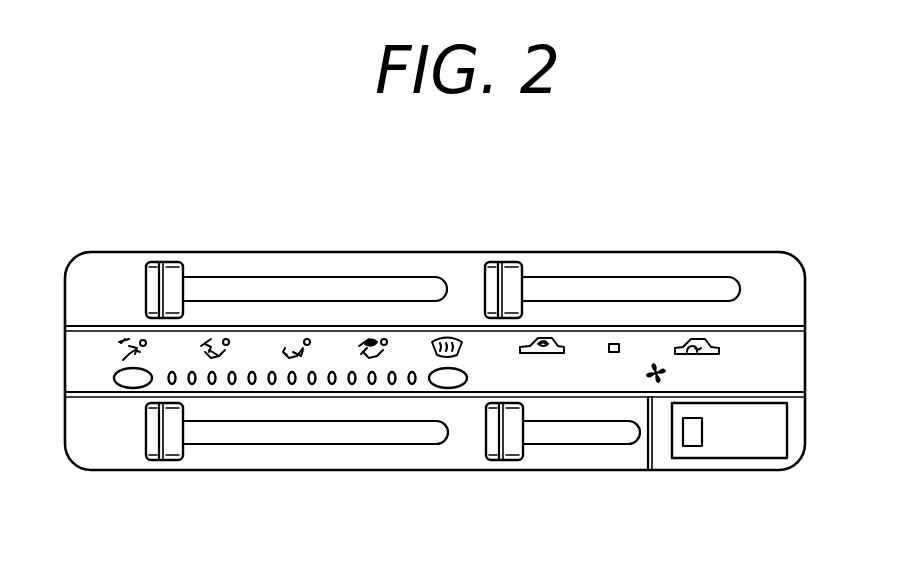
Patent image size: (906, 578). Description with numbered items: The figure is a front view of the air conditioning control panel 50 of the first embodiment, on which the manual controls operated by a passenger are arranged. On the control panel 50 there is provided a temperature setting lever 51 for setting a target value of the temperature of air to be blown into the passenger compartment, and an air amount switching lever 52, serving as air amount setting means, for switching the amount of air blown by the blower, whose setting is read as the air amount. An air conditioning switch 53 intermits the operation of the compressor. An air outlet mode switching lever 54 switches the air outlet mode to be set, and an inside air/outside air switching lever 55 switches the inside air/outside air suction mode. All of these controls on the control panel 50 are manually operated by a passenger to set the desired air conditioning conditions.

The control panel 50 is at (379, 242).
The temperature setting lever 51 is at (164, 460).
The air amount switching lever 52 is at (506, 460).
The air conditioning switch 53 is at (722, 458).
The air outlet mode switching lever 54 is at (163, 260).
The inside air/outside air switching lever 55 is at (504, 262).